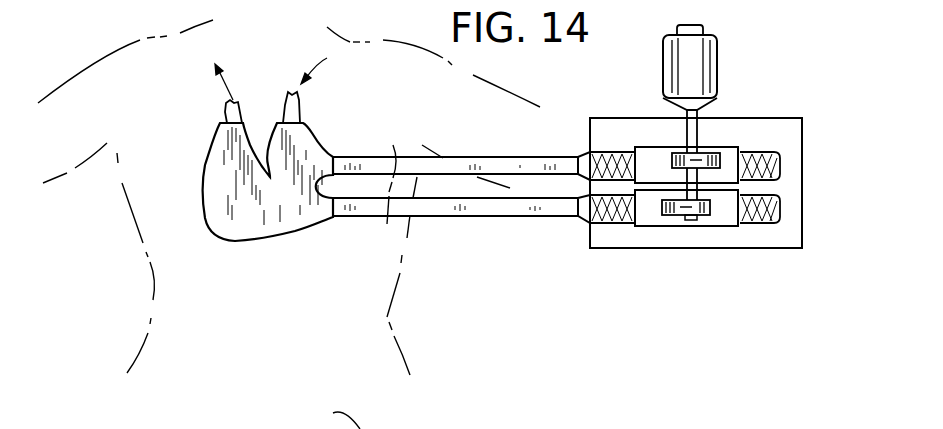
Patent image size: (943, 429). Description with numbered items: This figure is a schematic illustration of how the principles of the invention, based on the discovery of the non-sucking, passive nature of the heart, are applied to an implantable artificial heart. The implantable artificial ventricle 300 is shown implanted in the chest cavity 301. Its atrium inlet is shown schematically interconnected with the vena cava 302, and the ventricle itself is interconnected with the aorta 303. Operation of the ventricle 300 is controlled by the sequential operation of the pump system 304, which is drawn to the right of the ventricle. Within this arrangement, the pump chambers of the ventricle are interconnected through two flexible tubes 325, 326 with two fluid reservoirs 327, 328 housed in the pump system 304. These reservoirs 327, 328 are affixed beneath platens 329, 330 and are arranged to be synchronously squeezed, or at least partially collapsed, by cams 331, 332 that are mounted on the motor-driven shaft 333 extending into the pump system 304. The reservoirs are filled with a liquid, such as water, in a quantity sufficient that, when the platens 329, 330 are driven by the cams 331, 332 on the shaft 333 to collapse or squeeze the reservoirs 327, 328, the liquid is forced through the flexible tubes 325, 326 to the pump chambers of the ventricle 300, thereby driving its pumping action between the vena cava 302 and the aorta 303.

The implantable artificial ventricle 300 is at (227, 190).
The chest cavity 301 is at (237, 257).
The vena cava 302 is at (295, 115).
The aorta 303 is at (227, 110).
The pump system 304 is at (804, 203).
The flexible tube 325 is at (483, 207).
The flexible tube 326 is at (448, 163).
The fluid reservoir 327 is at (767, 227).
The fluid reservoir 328 is at (760, 160).
The platen 329 is at (652, 163).
The platen 330 is at (652, 215).
The cam 331 is at (707, 157).
The cam 332 is at (697, 216).
The motor-driven shaft 333 is at (700, 108).